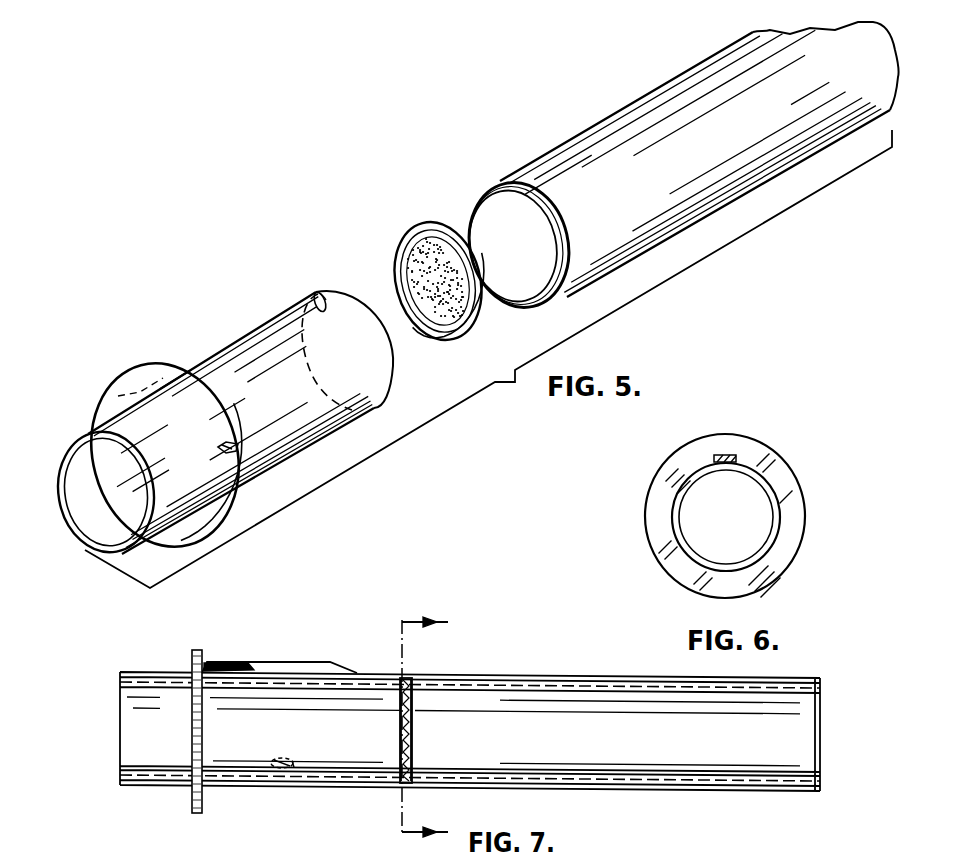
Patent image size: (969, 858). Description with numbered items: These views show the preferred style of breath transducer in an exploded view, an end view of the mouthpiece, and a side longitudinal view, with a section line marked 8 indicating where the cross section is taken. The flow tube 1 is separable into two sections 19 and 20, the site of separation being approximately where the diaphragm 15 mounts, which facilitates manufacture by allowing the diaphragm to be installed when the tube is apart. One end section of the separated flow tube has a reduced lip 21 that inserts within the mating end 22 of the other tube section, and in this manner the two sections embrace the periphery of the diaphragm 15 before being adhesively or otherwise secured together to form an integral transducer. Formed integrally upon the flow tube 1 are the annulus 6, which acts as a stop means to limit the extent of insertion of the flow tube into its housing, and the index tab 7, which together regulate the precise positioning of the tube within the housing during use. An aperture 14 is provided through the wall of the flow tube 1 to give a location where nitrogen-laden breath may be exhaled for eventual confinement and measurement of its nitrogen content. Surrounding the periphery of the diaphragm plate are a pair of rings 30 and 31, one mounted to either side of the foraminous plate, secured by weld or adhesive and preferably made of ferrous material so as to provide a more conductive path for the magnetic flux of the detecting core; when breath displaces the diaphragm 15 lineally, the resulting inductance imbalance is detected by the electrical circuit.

In FIG. 5, the flow tube 1 is at (81, 534).
In FIG. 6, the flow tube 1 is at (754, 440).
In FIG. 7, the flow tube 1 is at (470, 731).
In FIG. 5, the annulus 6 is at (110, 378).
In FIG. 6, the annulus 6 is at (654, 507).
In FIG. 7, the annulus 6 is at (197, 650).
In FIG. 5, the index tab 7 is at (174, 362).
In FIG. 7, the index tab 7 is at (263, 666).
In FIG. 7, the section line 8- 8 is at (425, 727).
In FIG. 5, the aperture 14 is at (240, 446).
In FIG. 7, the aperture 14 is at (275, 770).
In FIG. 5, the diaphragm 15 is at (410, 228).
In FIG. 7, the diaphragm 15 is at (412, 727).
In FIG. 5, the flow tube section 19 is at (276, 333).
In FIG. 5, the flow tube section 20 is at (558, 155).
In FIG. 5, the reduced lip 21 is at (530, 312).
In FIG. 5, the mating end 22 is at (318, 292).
In FIG. 7, the ring 30 is at (400, 726).
In FIG. 7, the ring 31 is at (413, 757).